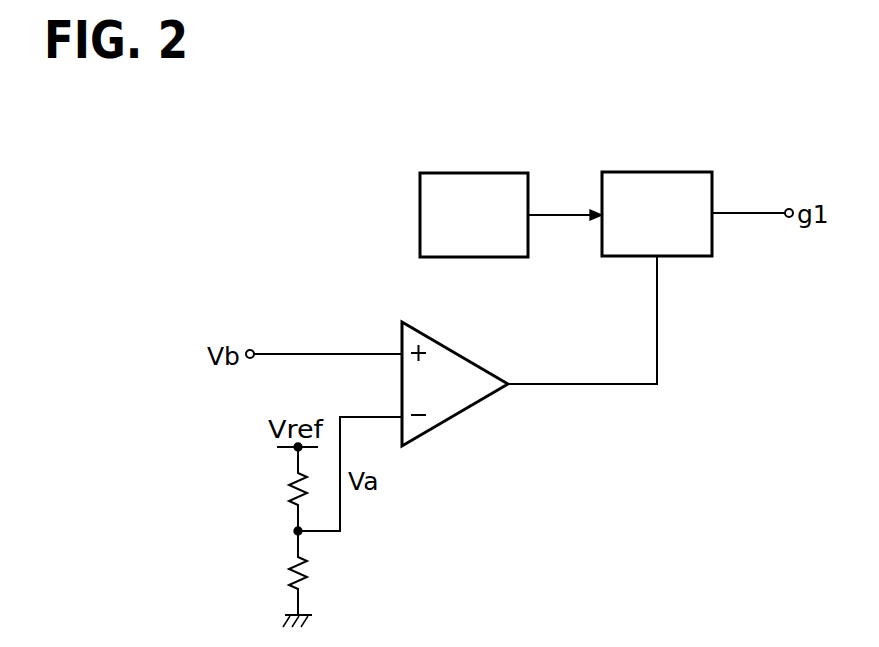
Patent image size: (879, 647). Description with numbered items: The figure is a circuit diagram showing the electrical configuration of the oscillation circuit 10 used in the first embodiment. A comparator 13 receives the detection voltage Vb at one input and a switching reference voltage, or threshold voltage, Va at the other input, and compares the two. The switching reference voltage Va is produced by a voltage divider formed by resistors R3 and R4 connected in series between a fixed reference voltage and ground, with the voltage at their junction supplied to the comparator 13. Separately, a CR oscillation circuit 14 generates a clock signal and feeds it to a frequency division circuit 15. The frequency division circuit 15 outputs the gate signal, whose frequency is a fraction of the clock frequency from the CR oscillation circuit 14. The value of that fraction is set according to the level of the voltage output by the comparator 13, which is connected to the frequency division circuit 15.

The oscillation circuit 10 is at (609, 93).
The comparator 13 is at (452, 348).
The CR oscillation circuit 14 is at (468, 173).
The frequency division circuit 15 is at (641, 172).
The resistor R3 is at (288, 489).
The resistor R4 is at (288, 575).